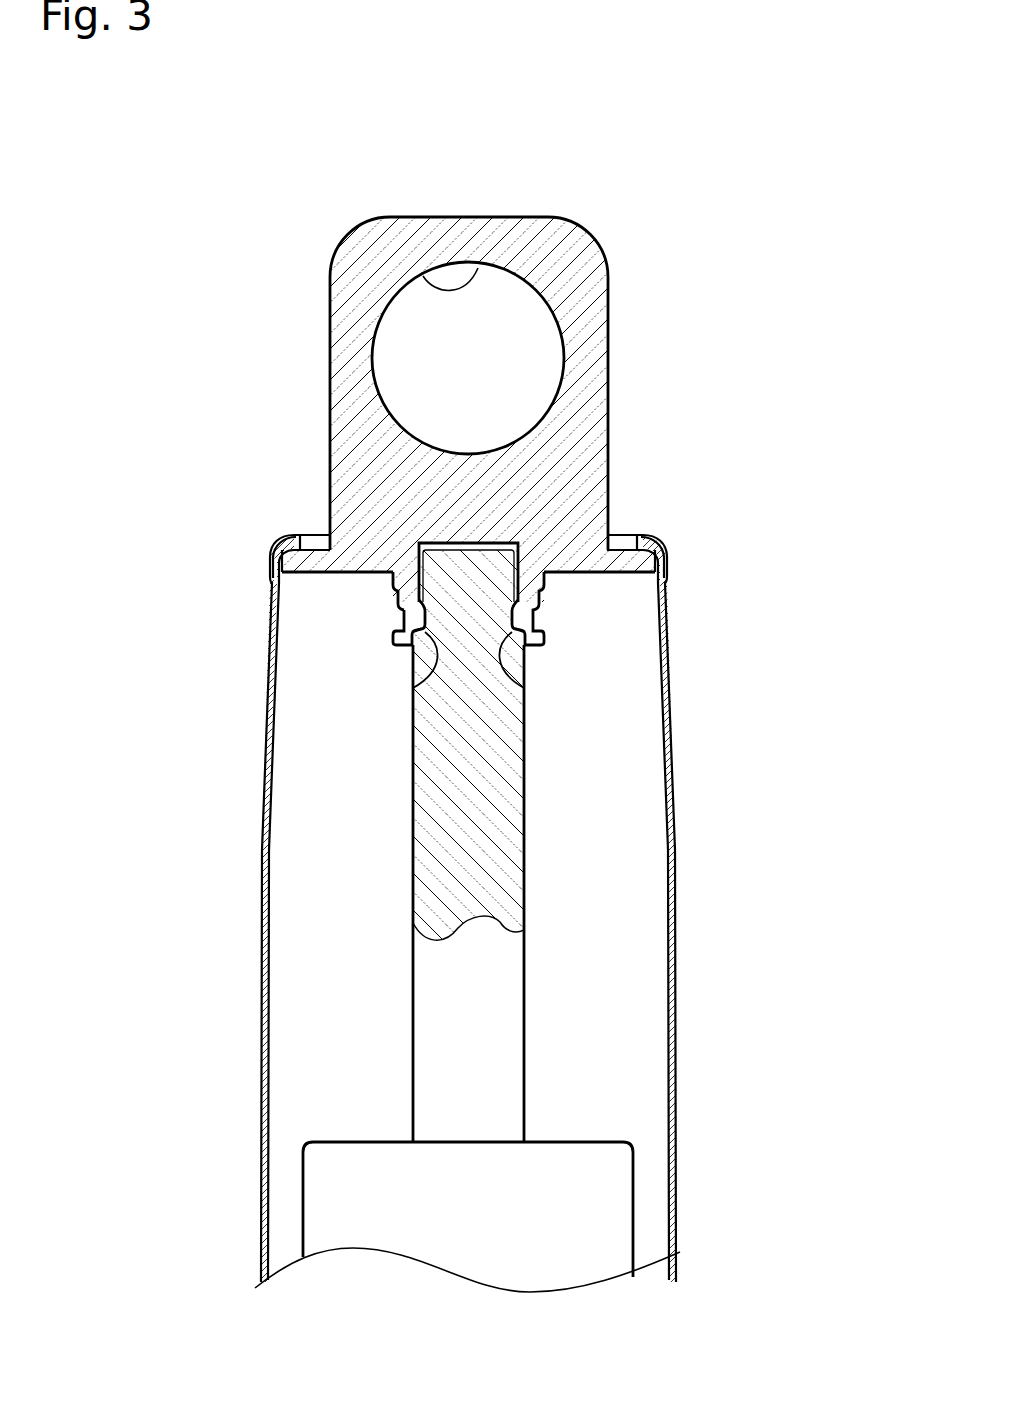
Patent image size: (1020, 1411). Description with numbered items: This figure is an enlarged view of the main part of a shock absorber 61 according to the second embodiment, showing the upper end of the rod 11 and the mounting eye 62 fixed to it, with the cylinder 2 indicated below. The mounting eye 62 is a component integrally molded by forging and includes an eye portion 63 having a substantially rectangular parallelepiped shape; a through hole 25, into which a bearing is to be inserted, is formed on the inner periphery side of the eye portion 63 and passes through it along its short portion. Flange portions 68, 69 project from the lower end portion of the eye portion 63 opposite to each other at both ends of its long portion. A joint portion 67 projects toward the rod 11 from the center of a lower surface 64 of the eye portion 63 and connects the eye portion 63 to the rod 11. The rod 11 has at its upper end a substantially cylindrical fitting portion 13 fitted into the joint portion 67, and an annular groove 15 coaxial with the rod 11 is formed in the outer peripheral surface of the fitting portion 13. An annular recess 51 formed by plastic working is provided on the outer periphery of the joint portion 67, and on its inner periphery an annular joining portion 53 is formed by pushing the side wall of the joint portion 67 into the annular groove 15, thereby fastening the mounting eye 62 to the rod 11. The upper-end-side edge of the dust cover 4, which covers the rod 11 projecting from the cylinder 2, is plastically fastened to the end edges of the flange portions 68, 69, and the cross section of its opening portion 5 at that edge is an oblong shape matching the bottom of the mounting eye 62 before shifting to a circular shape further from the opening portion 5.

The cylinder 2 is at (608, 1202).
The dust cover 4 is at (262, 1018).
The opening portion 5 is at (648, 537).
The rod 11 is at (498, 1020).
The fitting portion 13 is at (495, 557).
The annular groove 15 is at (532, 622).
The through hole 25 is at (424, 274).
The annular recess 51 is at (400, 623).
The joining portion 53 is at (413, 686).
The shock absorber 61 is at (670, 210).
The mounting eye 62 is at (328, 429).
The eye portion 63 is at (360, 322).
The lower surface 64 is at (600, 575).
The joint portion 67 is at (397, 597).
The flange portion 68 is at (293, 563).
The flange portion 69 is at (643, 563).